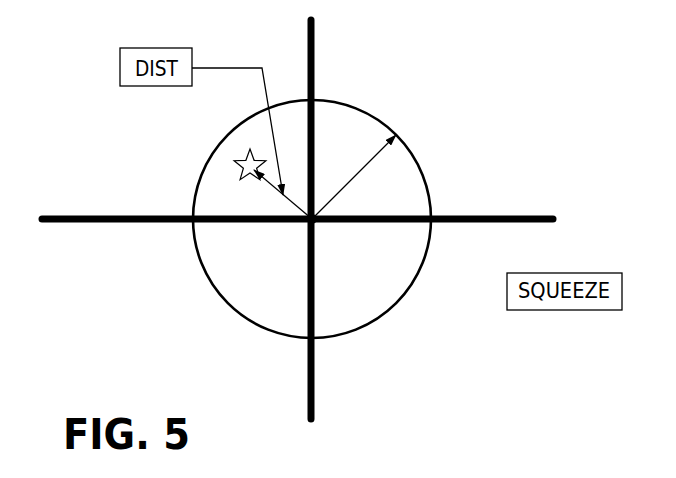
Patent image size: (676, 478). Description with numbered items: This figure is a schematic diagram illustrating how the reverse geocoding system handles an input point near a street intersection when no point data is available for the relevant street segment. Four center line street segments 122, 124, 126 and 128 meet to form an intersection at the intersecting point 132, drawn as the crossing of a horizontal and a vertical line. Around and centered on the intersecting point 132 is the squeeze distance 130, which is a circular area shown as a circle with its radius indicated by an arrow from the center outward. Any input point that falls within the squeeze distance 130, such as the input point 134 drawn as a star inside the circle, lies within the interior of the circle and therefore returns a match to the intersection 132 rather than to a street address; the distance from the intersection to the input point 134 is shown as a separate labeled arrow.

The street segment 122 is at (127, 215).
The street segment 124 is at (313, 363).
The street segment 126 is at (493, 219).
The street segment 128 is at (313, 65).
The squeeze distance 130 is at (355, 182).
The intersecting point 132 is at (312, 219).
The input point 134 is at (237, 163).